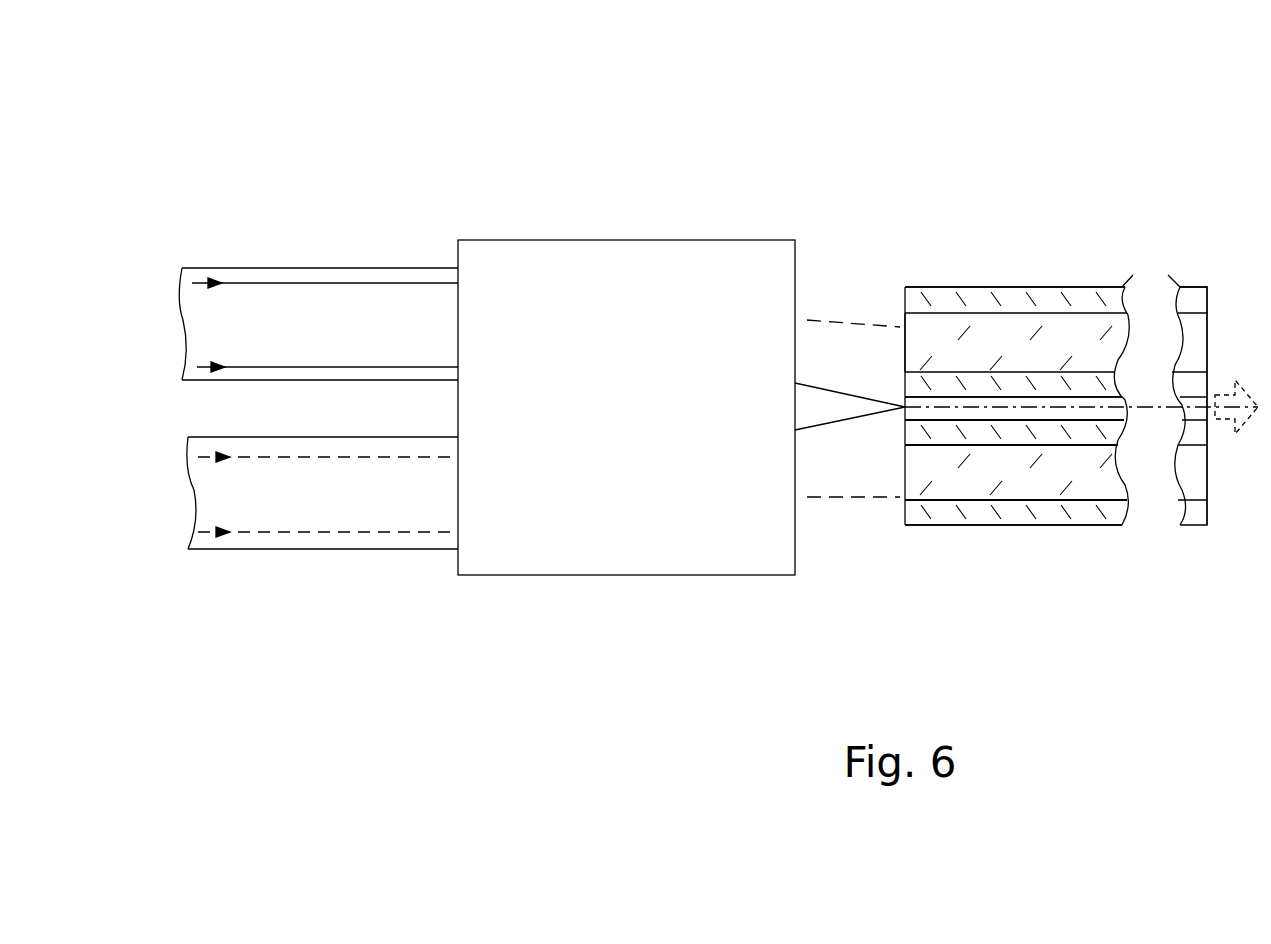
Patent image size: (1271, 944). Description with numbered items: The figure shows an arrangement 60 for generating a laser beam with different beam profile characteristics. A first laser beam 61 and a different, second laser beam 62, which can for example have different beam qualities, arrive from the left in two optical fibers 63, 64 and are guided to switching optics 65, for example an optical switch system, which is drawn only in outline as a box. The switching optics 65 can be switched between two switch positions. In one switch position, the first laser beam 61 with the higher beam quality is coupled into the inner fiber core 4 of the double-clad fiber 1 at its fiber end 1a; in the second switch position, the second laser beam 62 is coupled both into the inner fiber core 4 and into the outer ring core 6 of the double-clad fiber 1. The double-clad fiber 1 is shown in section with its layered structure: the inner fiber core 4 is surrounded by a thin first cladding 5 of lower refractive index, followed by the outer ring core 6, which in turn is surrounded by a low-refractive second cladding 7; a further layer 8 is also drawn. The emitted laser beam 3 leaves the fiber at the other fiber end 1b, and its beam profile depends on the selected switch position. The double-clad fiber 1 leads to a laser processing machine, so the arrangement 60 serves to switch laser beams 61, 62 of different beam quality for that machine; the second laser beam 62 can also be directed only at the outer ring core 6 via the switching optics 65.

The arrangement 60 is at (478, 136).
The first laser beam 61 is at (343, 282).
The second laser beam 62 is at (830, 318).
The optical fiber 63 is at (240, 268).
The optical fiber 64 is at (233, 550).
The switching optics 65 is at (660, 558).
The double-clad fiber 1 is at (1060, 278).
The fiber end 1a is at (960, 287).
The fiber end 1b is at (1195, 285).
The outer layer 8 is at (903, 345).
The emitted laser beam 3 is at (1228, 422).
The inner fiber core 4 is at (940, 417).
The first cladding 5 is at (985, 433).
The outer ring core 6 is at (1037, 473).
The second cladding 7 is at (1075, 515).